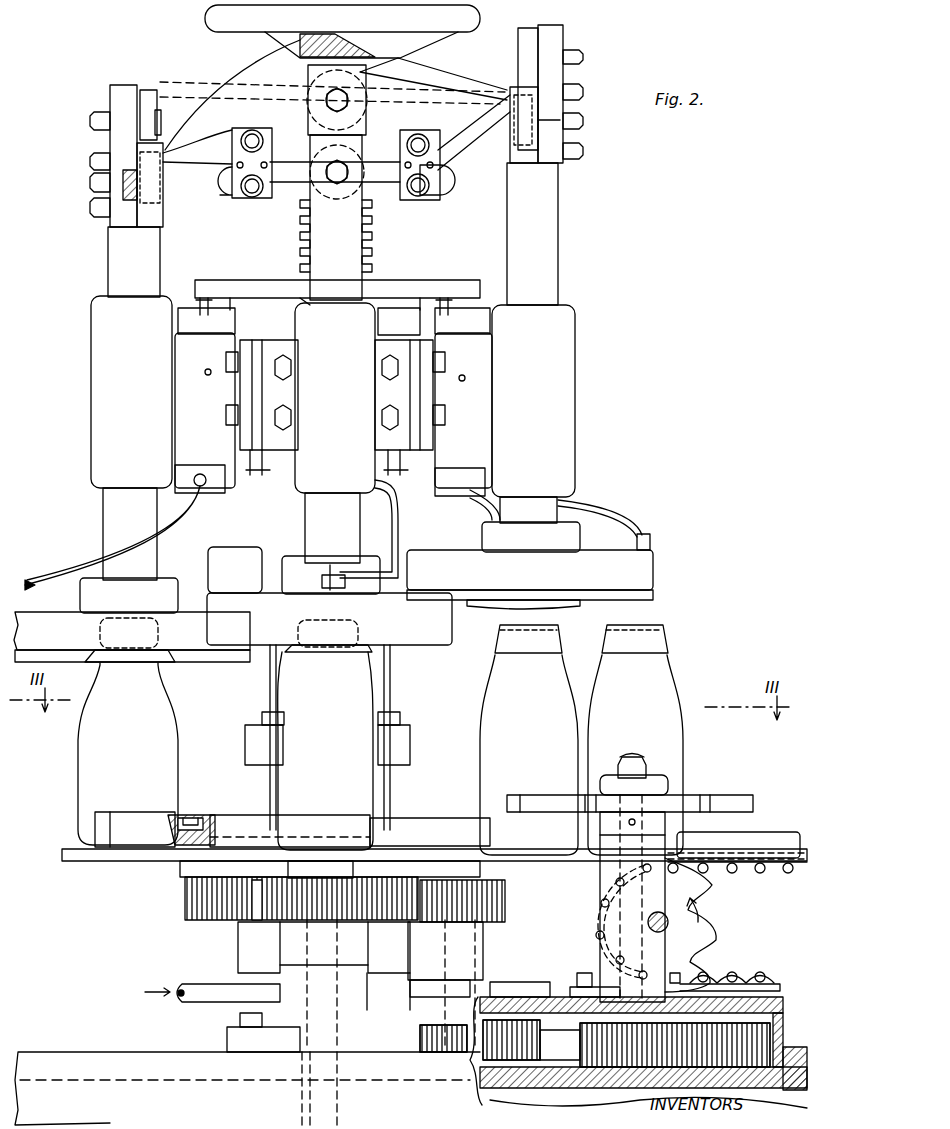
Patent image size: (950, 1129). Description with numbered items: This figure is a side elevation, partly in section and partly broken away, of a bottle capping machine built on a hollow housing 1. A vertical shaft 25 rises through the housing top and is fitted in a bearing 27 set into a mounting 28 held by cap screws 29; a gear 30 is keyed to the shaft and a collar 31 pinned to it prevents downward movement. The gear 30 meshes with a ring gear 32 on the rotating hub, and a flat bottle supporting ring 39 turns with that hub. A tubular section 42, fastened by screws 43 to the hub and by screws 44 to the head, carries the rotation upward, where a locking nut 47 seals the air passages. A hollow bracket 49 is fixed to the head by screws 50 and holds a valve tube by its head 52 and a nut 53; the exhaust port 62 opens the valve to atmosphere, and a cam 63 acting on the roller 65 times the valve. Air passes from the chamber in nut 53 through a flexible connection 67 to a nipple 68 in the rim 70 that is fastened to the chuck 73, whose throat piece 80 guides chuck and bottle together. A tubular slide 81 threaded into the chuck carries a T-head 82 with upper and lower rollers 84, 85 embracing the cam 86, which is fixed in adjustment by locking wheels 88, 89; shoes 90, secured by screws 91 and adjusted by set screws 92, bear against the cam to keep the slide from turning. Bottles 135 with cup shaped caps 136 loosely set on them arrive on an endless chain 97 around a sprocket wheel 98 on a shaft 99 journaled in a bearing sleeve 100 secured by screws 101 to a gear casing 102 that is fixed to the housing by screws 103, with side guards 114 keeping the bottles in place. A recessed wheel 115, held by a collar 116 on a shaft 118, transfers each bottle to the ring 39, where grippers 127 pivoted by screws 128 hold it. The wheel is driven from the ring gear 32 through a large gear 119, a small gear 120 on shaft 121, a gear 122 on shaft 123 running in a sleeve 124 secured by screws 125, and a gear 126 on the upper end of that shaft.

The hollow housing 1 is at (411, 1088).
The vertical shaft 25 is at (300, 1100).
The bearing 27 is at (295, 922).
The mounting 28 is at (250, 980).
The cap screws 29 is at (240, 1020).
The gear 30 is at (250, 922).
The collar 31 is at (330, 871).
The ring gear 32 is at (185, 900).
The bottle supporting ring 39 is at (108, 858).
The tubular section 42 is at (384, 688).
The screws 43 is at (402, 718).
The screws 44 is at (258, 476).
The locking nut 47 is at (399, 321).
The hollow bracket 49 is at (333, 396).
The screws 50 is at (228, 360).
The head 52 is at (334, 321).
The nut 53 is at (220, 492).
The port 62 is at (206, 370).
The cam 63 is at (337, 295).
The roller 65 is at (200, 298).
The flexible connection 67 is at (80, 572).
The nipple 68 is at (330, 568).
The rim 70 is at (333, 606).
The chuck 73 is at (330, 550).
The throat piece 80 is at (133, 662).
The tubular slide 81 is at (110, 270).
The T-head 82 is at (120, 92).
The upper roller 84 is at (150, 95).
The lower roller 85 is at (345, 210).
The cam 86 is at (455, 100).
The locking wheel 88 is at (342, 31).
The locking wheel 89 is at (458, 178).
The shoes 90 is at (162, 170).
The screws 91 is at (582, 93).
The set screws 92 is at (105, 190).
The endless chain 97 is at (768, 874).
The sprocket wheel 98 is at (705, 898).
The shaft 99 is at (670, 924).
The bearing sleeve 100 is at (598, 888).
The screws 101 is at (578, 975).
The gear casing 102 is at (770, 990).
The screws 103 is at (783, 1079).
The side guards 114 is at (737, 845).
The recessed wheel 115 is at (752, 808).
The collar 116 is at (598, 826).
The shaft 118 is at (640, 762).
The large gear 119 is at (560, 1088).
The small gear 120 is at (485, 1060).
The shaft 121 is at (535, 1062).
The gear 122 is at (440, 1055).
The shaft 123 is at (475, 940).
The sleeve 124 is at (480, 952).
The screws 125 is at (412, 982).
The gear 126 is at (506, 903).
The grippers 127 is at (612, 780).
The screws 128 is at (185, 820).
The bottles 135 is at (380, 755).
The cup shaped caps 136 is at (688, 652).